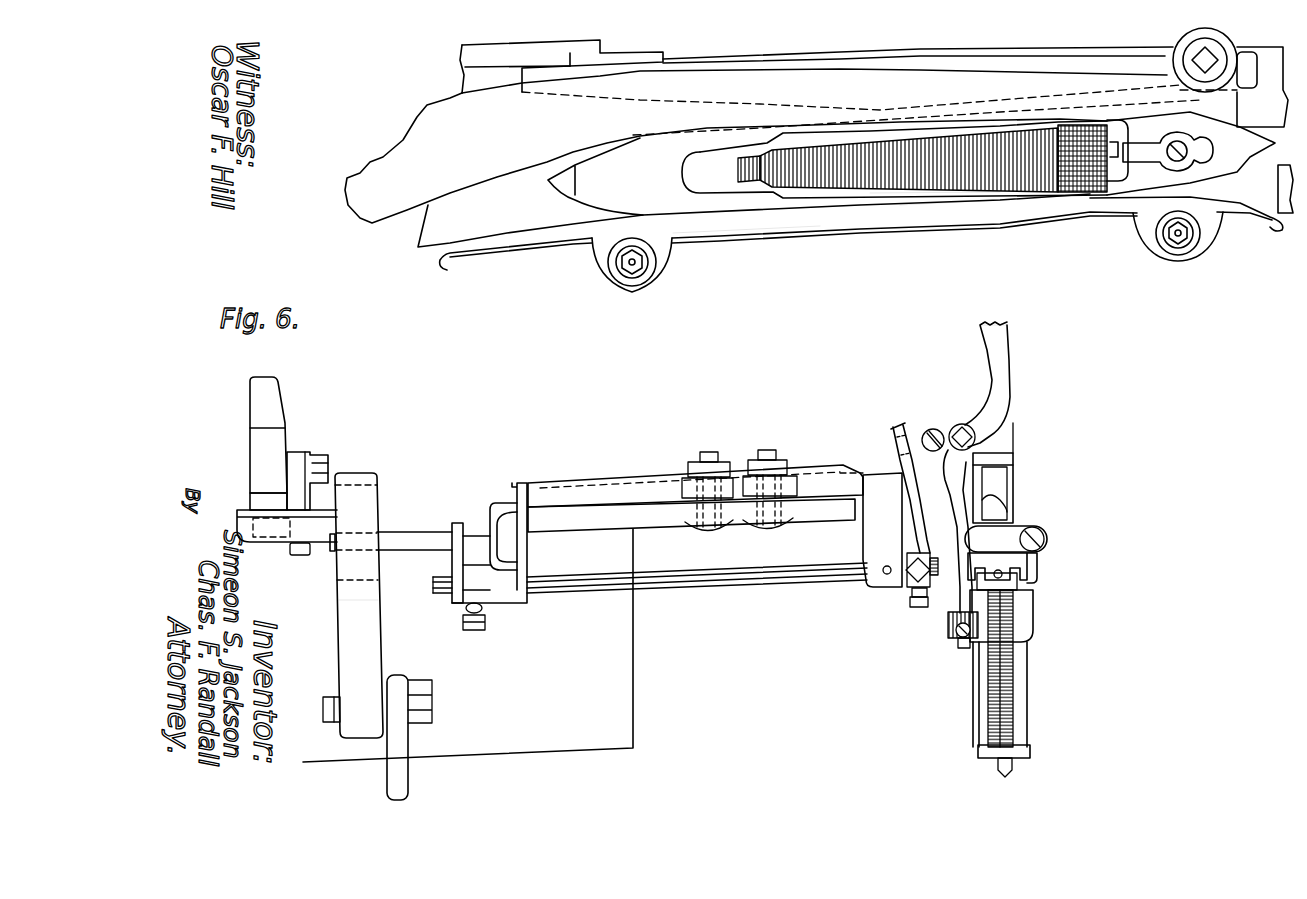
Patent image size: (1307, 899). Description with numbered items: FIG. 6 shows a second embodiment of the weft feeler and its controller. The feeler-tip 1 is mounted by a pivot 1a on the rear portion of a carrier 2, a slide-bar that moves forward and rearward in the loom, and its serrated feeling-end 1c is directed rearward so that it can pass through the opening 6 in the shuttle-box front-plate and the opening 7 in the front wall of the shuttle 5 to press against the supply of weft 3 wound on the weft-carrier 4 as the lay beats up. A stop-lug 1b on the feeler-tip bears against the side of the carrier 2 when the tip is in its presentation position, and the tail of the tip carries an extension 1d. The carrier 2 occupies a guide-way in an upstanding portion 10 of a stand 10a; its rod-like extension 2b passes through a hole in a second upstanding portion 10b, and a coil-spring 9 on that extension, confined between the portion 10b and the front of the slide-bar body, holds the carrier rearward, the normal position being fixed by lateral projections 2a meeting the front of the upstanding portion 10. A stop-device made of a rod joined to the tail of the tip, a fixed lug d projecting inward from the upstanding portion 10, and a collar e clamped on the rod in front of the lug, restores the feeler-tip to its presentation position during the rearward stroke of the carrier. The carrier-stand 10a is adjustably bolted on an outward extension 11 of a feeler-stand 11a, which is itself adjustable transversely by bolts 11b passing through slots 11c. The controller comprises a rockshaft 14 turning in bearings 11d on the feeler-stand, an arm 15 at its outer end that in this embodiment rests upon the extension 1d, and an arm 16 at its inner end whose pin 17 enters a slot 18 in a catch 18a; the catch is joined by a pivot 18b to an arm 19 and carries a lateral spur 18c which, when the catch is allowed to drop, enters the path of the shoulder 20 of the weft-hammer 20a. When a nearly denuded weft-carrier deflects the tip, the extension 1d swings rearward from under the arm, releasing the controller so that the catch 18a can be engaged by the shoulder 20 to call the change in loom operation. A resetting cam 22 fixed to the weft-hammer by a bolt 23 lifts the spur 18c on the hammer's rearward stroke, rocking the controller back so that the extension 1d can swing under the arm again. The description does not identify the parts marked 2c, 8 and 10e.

The feeler-tip 1 is at (1008, 383).
The pivot 1a is at (962, 424).
The stop-lug 1b is at (935, 428).
The feeling-end 1c is at (993, 323).
The extension 1d is at (910, 426).
The carrier 2 is at (1013, 482).
The lateral projections 2a is at (1050, 583).
The rod-like extension 2b is at (1013, 768).
The connecting arm 2c is at (917, 449).
The weft-supply 3 is at (865, 137).
The weft-carrier 4 is at (1047, 128).
The shuttle 5 is at (735, 200).
The opening in shuttle-box front-plate 6 is at (957, 210).
The opening in front wall of shuttle-body 7 is at (950, 192).
The stock bottom 8 is at (803, 222).
The coil-spring 9 is at (1010, 695).
The upstanding portion 10 is at (1037, 558).
The carrier-stand 10a is at (1028, 678).
The second upstanding portion 10b is at (977, 757).
The roller 10e is at (1012, 533).
The outward extension 11 is at (691, 515).
The feeler-stand 11a is at (594, 480).
The bolts 11b is at (795, 415).
The slots 11c is at (815, 450).
The bearings 11d is at (880, 587).
The rockshaft 14 is at (757, 590).
The arm 15 is at (912, 520).
The arm 16 is at (457, 523).
The pin 17 is at (397, 533).
The slot 18 is at (355, 580).
The catch 18a is at (369, 624).
The pivot 18b is at (323, 703).
The spur 18c is at (270, 542).
The arm 19 is at (387, 785).
The shoulder 20 is at (268, 490).
The weft-hammer 20a is at (285, 403).
The resetting cam 22 is at (300, 555).
The bolt 23 is at (320, 452).
The lug d is at (950, 615).
The collar e is at (950, 635).